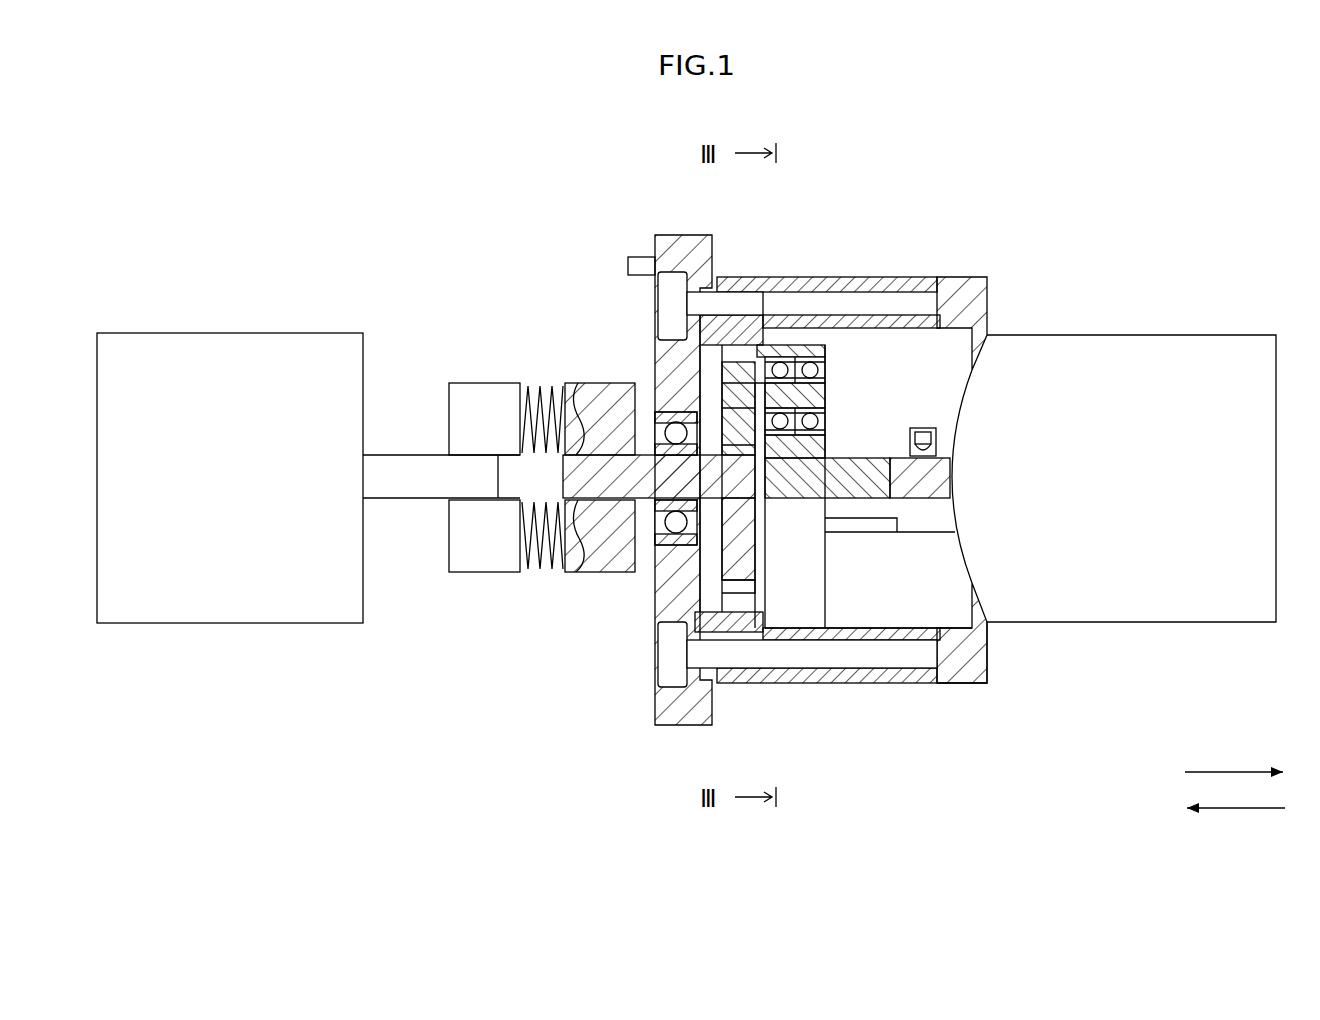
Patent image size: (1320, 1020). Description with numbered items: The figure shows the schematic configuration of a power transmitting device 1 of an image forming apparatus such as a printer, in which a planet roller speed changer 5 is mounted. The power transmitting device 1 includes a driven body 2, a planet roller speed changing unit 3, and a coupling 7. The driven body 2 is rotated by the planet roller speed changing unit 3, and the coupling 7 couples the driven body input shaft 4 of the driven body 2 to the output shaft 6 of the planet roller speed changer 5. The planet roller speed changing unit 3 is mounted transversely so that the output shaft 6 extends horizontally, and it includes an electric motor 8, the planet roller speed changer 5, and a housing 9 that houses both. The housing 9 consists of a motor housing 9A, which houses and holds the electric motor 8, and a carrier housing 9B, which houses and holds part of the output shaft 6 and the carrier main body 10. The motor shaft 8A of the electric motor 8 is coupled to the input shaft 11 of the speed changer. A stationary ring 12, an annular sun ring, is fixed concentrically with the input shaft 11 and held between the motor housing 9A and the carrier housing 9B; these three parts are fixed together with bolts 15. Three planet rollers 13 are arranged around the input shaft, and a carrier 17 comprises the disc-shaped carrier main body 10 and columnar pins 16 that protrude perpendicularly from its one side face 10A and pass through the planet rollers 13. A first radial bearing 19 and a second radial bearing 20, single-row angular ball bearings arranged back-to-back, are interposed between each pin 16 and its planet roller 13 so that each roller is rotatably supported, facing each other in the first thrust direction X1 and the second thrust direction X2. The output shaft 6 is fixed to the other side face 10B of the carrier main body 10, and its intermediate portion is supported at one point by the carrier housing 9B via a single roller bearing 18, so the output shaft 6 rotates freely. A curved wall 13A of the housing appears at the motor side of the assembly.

The power transmitting device 1 is at (441, 247).
The driven body 2 is at (221, 625).
The planet roller speed changing unit 3 is at (970, 707).
The driven body input shaft 4 is at (402, 470).
The planet roller speed changer 5 is at (821, 687).
The output shaft 6 is at (621, 472).
The coupling 7 is at (545, 376).
The electric motor 8 is at (1104, 598).
The motor shaft 8A is at (907, 478).
The housing 9 is at (841, 415).
The motor housing 9A is at (890, 277).
The carrier housing 9B is at (878, 198).
The carrier main body 10 is at (864, 554).
The one side face 10A is at (760, 574).
The other side face 10B is at (717, 582).
The input shaft 11 is at (793, 487).
The stationary ring 12 is at (815, 632).
The planet roller 13 is at (827, 351).
The cover curved wall 13A is at (827, 360).
The bolt 15 is at (708, 302).
The pin 16 is at (800, 395).
The carrier 17 is at (1035, 402).
The roller bearing 18 is at (661, 555).
The first radial bearing 19 is at (826, 380).
The second radial bearing 20 is at (767, 355).
The first thrust direction X1 is at (1227, 770).
The second thrust direction X2 is at (1240, 812).